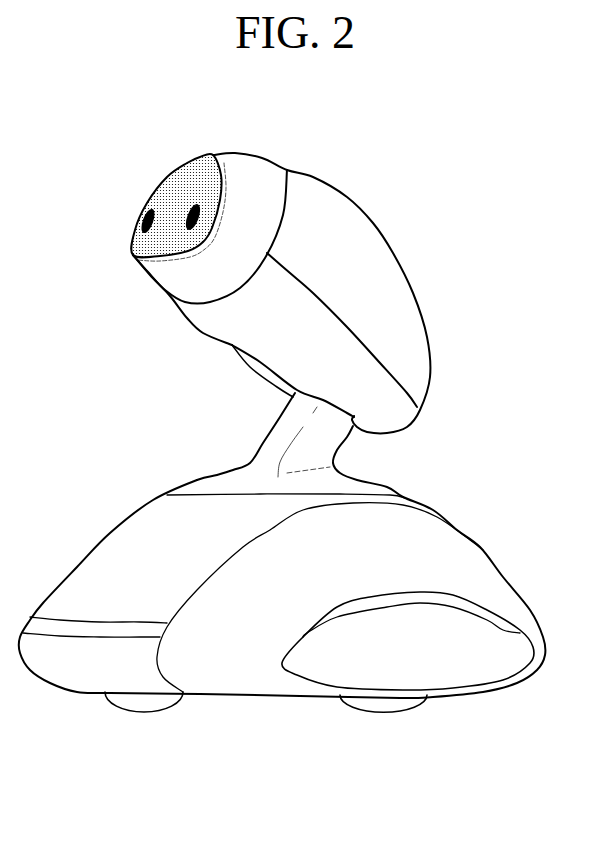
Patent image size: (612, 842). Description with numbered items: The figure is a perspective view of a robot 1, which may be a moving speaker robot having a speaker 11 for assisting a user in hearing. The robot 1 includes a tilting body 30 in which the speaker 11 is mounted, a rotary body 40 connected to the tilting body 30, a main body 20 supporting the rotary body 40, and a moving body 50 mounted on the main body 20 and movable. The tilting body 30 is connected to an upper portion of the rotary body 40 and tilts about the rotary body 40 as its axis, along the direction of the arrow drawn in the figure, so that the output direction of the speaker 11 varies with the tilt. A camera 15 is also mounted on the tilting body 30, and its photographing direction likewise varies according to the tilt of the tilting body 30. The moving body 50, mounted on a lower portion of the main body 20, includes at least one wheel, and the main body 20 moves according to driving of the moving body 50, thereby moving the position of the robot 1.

The robot 1 is at (348, 168).
The speaker 11 is at (187, 177).
The camera 15 is at (180, 222).
The main body 20 is at (467, 550).
The tilting body 30 is at (370, 237).
The rotary body 40 is at (360, 482).
The moving body 50 is at (157, 703).